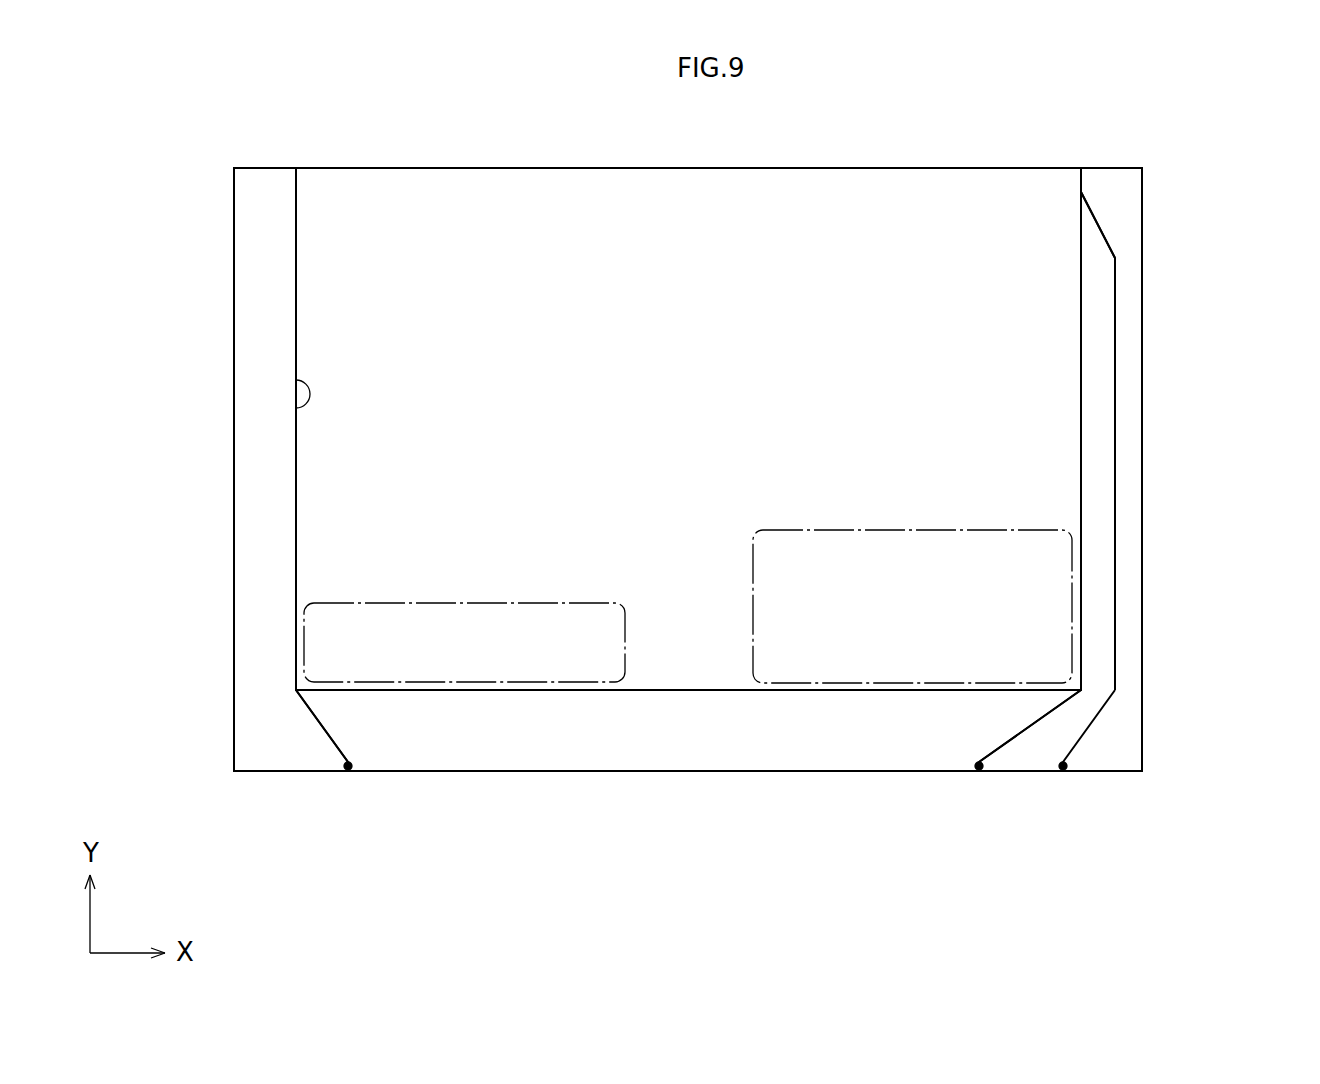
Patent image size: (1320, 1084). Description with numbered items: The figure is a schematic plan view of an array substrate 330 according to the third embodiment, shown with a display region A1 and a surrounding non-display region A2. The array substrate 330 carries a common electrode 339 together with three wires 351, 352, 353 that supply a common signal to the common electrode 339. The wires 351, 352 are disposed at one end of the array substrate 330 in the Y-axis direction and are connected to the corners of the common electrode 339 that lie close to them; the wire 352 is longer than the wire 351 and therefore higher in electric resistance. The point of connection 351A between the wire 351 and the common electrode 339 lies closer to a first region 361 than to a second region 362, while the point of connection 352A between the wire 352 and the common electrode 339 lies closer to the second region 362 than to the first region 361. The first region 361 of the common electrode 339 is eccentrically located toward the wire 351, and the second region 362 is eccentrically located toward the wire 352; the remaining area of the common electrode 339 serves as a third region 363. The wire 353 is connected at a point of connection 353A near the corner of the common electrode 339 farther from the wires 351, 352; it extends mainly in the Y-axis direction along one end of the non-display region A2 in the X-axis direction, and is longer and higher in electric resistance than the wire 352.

The array substrate 330 is at (1144, 89).
The common electrode 339 is at (507, 195).
The third region 363 is at (1027, 343).
The wire 353 is at (1115, 467).
The point of connection 353A is at (1081, 192).
The wire 351 is at (328, 730).
The point of connection 351A is at (296, 690).
The wire 352 is at (1013, 735).
The point of connection 352A is at (1081, 690).
The first region 361 is at (498, 665).
The second region 362 is at (848, 645).
The display region A1 is at (296, 380).
The non-display region A2 is at (1133, 627).